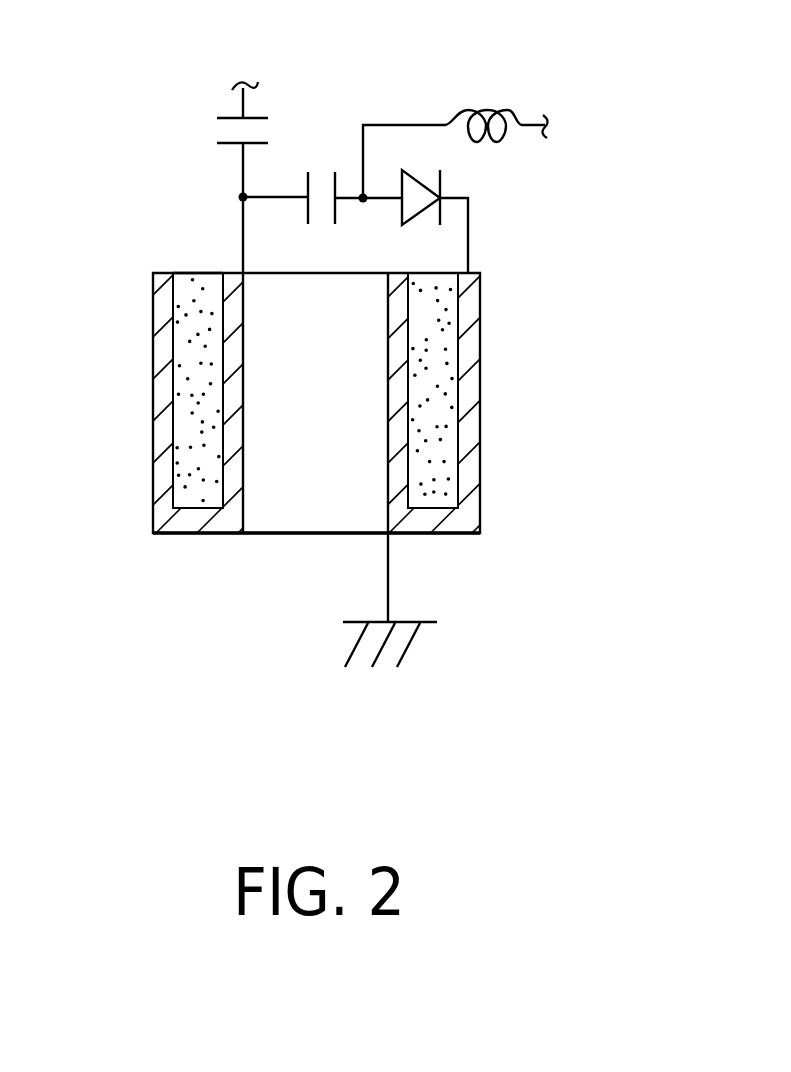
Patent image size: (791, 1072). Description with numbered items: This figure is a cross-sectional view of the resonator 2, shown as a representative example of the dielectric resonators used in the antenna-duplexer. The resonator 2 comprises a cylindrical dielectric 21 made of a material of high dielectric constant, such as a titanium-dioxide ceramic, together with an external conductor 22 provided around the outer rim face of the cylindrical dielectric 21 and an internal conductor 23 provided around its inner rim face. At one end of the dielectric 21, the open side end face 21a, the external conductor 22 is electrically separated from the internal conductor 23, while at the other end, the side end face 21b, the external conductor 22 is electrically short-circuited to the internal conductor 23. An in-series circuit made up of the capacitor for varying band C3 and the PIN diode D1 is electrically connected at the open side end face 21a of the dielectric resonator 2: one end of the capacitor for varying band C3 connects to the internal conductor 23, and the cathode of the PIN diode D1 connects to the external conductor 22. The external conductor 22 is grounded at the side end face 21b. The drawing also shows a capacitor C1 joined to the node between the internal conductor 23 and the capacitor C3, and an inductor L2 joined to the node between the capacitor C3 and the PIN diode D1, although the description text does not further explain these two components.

The resonator 2 is at (366, 418).
The cylindrical dielectric 21 is at (443, 457).
The open side end face 21a is at (206, 272).
The side end face 21b is at (188, 512).
The external conductor 22 is at (153, 409).
The internal conductor 23 is at (388, 420).
The capacitor C1 is at (232, 146).
The capacitor for varying band C3 is at (307, 186).
The inductor L2 is at (493, 110).
The PIN diode D1 is at (417, 217).